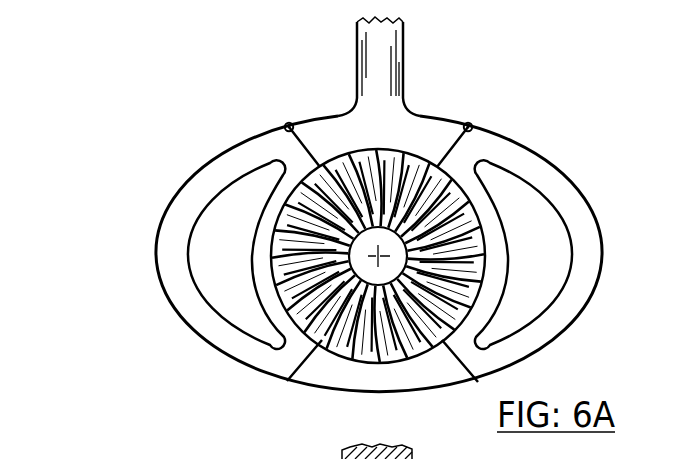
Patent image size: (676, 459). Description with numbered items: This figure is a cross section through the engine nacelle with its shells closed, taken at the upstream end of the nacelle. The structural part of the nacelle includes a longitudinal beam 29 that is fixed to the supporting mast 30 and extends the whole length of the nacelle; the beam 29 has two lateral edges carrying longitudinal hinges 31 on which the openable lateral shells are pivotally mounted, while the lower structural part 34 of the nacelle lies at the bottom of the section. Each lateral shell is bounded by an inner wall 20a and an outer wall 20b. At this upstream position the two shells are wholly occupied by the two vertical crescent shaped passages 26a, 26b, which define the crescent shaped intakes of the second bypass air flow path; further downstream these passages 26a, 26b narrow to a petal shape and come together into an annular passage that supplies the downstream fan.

The longitudinal beam 29 is at (404, 130).
The supporting mast 30 is at (377, 67).
The longitudinal hinges 31 is at (285, 125).
The lower structural part 34 is at (318, 372).
The inner wall 20a is at (268, 215).
The outer wall 20b is at (193, 308).
The crescent shaped passage 26a is at (232, 188).
The crescent shaped passage 26b is at (536, 303).